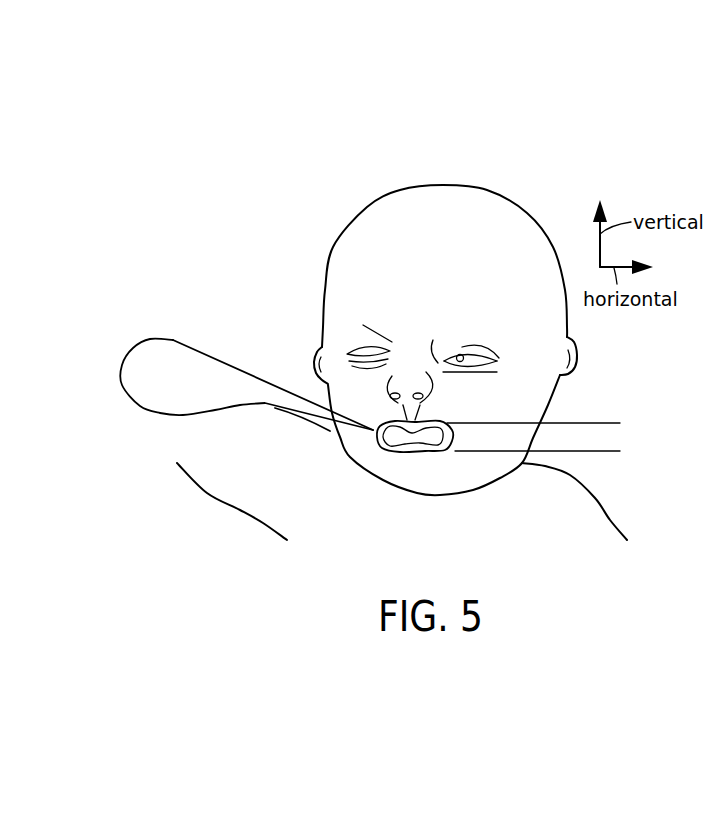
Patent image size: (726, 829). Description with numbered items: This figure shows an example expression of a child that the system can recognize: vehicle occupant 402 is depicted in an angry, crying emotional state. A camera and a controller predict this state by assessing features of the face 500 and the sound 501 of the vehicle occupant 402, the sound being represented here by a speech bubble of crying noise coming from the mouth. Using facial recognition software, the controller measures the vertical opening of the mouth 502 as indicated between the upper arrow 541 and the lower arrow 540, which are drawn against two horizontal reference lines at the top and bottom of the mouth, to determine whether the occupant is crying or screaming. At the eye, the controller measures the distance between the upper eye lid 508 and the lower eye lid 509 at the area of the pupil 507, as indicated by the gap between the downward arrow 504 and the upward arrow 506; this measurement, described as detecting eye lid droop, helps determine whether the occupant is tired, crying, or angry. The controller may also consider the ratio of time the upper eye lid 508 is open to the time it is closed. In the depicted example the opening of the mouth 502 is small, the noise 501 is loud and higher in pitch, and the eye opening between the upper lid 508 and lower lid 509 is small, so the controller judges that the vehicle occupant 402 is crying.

The vehicle occupant 402 is at (338, 192).
The face 500 is at (336, 328).
The sound 501 is at (160, 337).
The mouth 502 is at (420, 447).
The arrow 504 is at (460, 346).
The arrow 506 is at (460, 372).
The pupil 507 is at (470, 363).
The upper eye lid 508 is at (462, 357).
The lower eye lid 509 is at (465, 360).
The arrow 540 is at (606, 460).
The arrow 541 is at (606, 415).